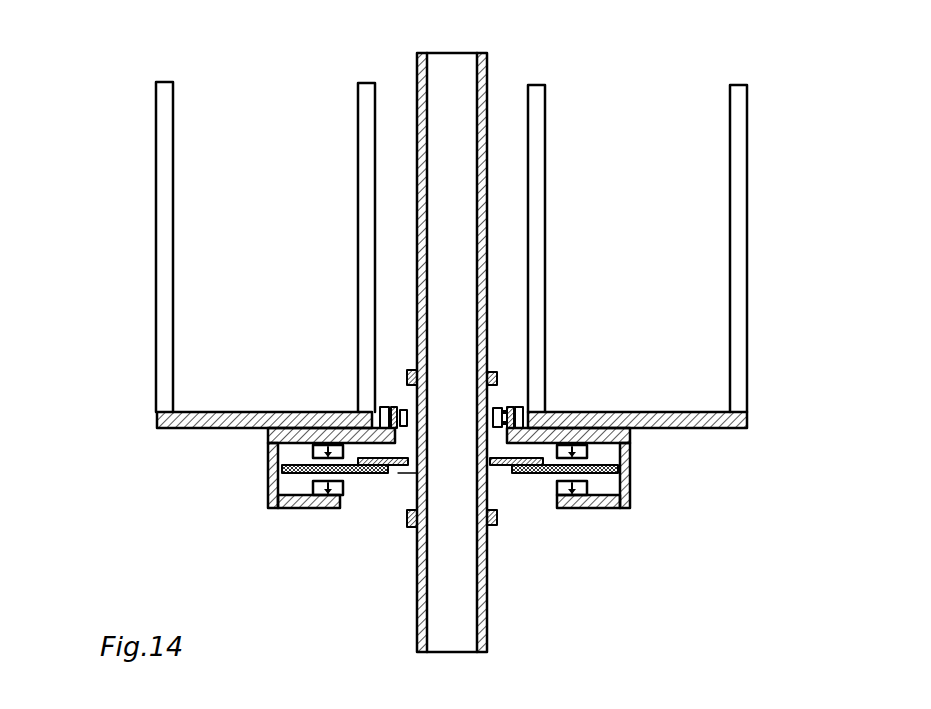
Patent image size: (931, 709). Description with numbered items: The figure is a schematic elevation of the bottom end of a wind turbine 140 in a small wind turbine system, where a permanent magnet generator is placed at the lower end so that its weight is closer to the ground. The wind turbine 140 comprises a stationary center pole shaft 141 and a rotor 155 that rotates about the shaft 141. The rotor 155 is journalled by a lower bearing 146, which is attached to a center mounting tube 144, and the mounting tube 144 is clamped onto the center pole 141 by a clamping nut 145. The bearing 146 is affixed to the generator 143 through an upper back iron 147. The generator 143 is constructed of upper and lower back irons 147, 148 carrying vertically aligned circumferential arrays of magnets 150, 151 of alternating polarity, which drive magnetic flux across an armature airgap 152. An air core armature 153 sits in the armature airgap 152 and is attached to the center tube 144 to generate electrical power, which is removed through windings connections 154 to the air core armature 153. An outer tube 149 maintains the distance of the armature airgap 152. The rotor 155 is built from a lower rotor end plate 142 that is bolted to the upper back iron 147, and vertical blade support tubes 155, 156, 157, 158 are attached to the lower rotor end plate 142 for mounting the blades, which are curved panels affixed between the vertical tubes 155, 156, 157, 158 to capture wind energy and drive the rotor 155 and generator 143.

The wind turbine 140 is at (102, 64).
The stationary center pole shaft 141 is at (417, 68).
The lower rotor end plate 142 is at (668, 412).
The generator 143 is at (665, 447).
The center mounting tube 144 is at (498, 501).
The clamping nut 145 is at (496, 505).
The lower bearing 146 is at (500, 410).
The upper back iron 147 is at (290, 428).
The lower back iron 148 is at (297, 508).
The outer tube 149 is at (268, 470).
The magnets 150 is at (335, 445).
The magnets 151 is at (343, 508).
The armature airgap 152 is at (347, 482).
The air core armature 153 is at (544, 474).
The windings connections 154 is at (406, 474).
The rotor 155 is at (640, 66).
The vertical blade support tube 156 is at (358, 258).
The vertical blade support tube 157 is at (545, 258).
The vertical blade support tube 158 is at (745, 252).